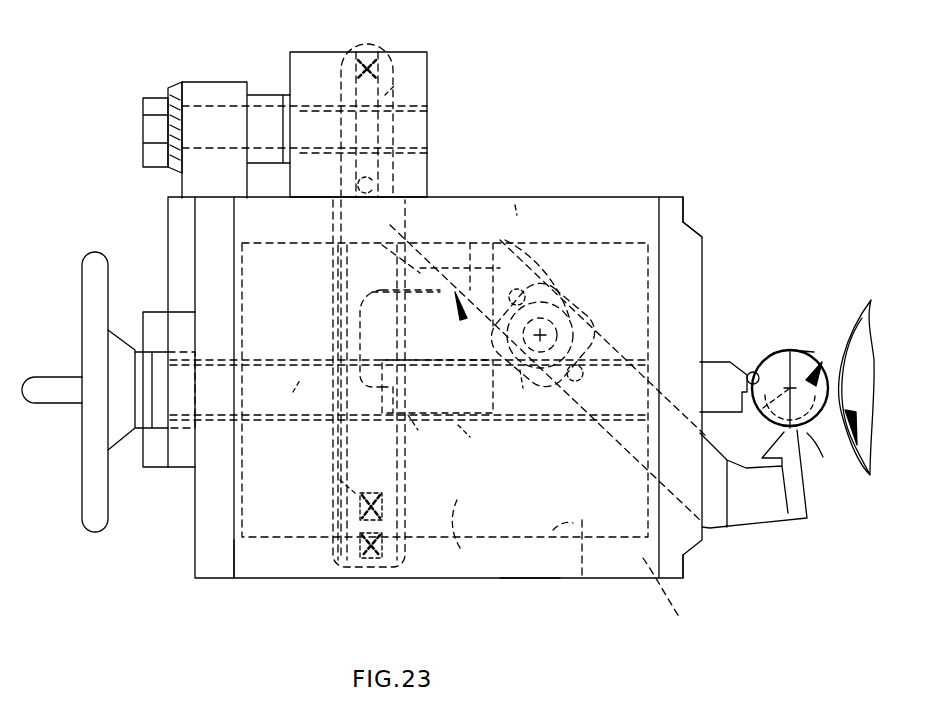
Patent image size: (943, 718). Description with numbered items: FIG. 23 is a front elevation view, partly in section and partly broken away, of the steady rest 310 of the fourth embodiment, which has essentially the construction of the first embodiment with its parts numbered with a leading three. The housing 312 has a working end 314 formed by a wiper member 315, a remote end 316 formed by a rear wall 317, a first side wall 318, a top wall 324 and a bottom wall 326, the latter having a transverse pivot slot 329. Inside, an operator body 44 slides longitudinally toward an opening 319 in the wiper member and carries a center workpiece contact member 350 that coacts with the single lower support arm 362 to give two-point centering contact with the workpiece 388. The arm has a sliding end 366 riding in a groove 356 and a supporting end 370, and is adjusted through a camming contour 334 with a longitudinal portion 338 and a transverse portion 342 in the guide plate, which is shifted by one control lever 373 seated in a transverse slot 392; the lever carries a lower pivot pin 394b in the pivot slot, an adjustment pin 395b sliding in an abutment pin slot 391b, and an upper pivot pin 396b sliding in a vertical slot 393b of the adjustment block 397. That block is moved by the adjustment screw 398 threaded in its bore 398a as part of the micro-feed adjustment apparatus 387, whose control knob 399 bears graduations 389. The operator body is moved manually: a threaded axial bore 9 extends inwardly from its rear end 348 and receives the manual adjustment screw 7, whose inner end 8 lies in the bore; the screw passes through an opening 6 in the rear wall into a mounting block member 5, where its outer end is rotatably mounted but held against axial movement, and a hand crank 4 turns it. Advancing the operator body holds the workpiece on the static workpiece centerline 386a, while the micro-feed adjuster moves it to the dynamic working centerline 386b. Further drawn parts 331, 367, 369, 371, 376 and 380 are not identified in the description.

The hand crank 4 is at (100, 424).
The mounting block member 5 is at (170, 455).
The opening 6 is at (218, 416).
The manual adjustment screw 7 is at (293, 392).
The inner end of manual adjustment screw 8 is at (423, 436).
The threaded axial bore 9 is at (475, 445).
The operator body 44 is at (512, 533).
The steady rest 310 is at (602, 190).
The housing 312 is at (662, 190).
The working end 314 is at (683, 214).
The wiper member 315 is at (672, 560).
The remote end 316 is at (195, 540).
The rear wall 317 is at (222, 557).
The first side wall 318 is at (528, 565).
The opening 319 is at (582, 578).
The top wall 324 is at (517, 198).
The bottom wall 326 is at (682, 605).
The transverse pivot slot 329 is at (396, 570).
The curved guide 331 is at (868, 302).
The camming contour 334 is at (468, 240).
The longitudinal portion 338 is at (426, 351).
The transverse portion 342 is at (585, 306).
The rear end of operator body 348 is at (340, 328).
The center workpiece contact member 350 is at (752, 372).
The groove 356 is at (528, 243).
The lower support arm 362 is at (760, 540).
The sliding end 366 is at (398, 234).
The cam body 367 is at (572, 318).
The cam roller 369 is at (588, 340).
The supporting end 370 is at (797, 478).
The cam roller 371 is at (560, 282).
The control lever 373 is at (392, 90).
The link 376 is at (833, 454).
The cam lobe 380 is at (523, 390).
The static workpiece centerline 386a is at (729, 402).
The dynamic working centerline 386b is at (815, 350).
The micro-feed adjustment apparatus 387 is at (190, 70).
The workpiece 388 is at (780, 352).
The graduations 389 is at (175, 92).
The abutment pin slot 391b is at (358, 515).
The transverse slot 392 is at (340, 286).
The vertical slot 393b is at (385, 190).
The lower pivot pin 394b is at (356, 565).
The adjustment pin 395b is at (355, 493).
The upper pivot pin 396b is at (352, 50).
The adjustment block 397 is at (415, 68).
The adjustment screw 398 is at (408, 122).
The threaded bore 398a is at (425, 145).
The control knob 399 is at (152, 122).